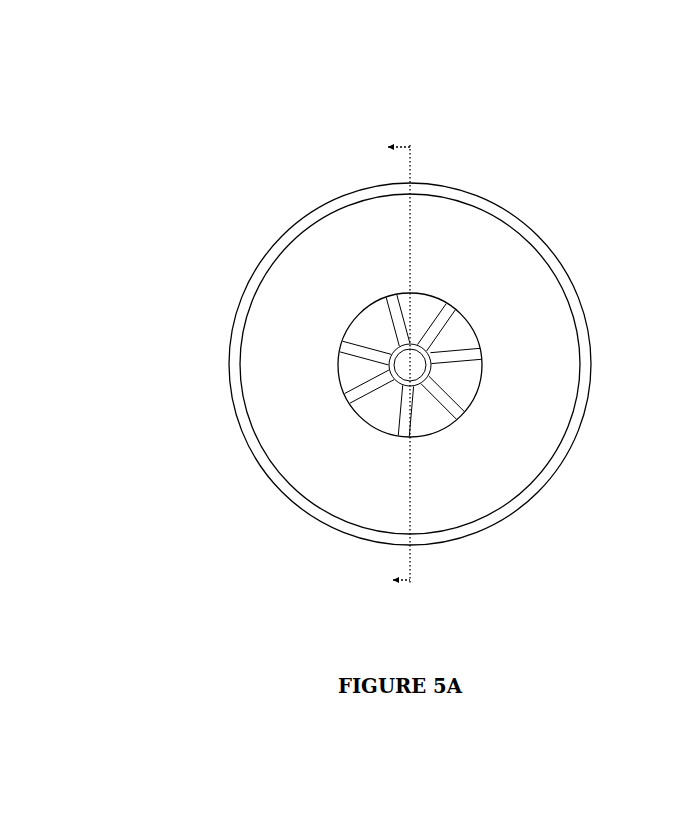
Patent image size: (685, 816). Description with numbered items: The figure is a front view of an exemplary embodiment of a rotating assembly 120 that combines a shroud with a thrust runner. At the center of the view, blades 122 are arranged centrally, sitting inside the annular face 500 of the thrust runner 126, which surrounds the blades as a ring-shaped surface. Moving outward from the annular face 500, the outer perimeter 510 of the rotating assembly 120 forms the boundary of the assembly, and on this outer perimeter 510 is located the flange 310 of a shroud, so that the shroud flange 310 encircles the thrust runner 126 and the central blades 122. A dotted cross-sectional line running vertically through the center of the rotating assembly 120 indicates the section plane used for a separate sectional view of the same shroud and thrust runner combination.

The rotating assembly 120 is at (280, 158).
The blades 122 is at (385, 357).
The thrust runner 126 is at (537, 390).
The annular face 500 is at (512, 333).
The outer perimeter 510 is at (523, 222).
The flange 310 is at (542, 482).